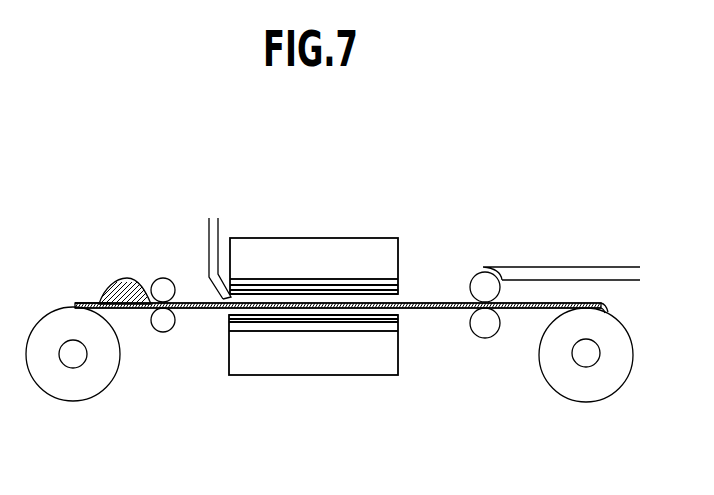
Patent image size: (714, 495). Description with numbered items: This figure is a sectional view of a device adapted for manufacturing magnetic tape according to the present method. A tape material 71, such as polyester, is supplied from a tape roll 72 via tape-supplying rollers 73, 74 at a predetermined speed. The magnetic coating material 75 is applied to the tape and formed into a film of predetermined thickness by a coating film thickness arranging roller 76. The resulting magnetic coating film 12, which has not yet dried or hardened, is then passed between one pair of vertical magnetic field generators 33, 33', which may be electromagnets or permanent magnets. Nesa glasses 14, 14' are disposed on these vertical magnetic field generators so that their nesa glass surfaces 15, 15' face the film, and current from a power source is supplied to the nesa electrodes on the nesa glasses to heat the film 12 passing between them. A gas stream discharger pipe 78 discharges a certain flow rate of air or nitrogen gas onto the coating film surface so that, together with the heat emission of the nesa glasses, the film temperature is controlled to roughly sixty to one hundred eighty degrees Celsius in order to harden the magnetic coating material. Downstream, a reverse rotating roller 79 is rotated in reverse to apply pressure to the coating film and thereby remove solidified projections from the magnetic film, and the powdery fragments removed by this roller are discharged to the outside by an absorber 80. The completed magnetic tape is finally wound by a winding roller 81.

The magnetic coating film 12 is at (199, 309).
The nesa glass 14 is at (342, 269).
The nesa glass surface 15 is at (342, 290).
The nesa glass 14' is at (345, 346).
The nesa glass surface 15' is at (345, 329).
The vertical magnetic field generator 33 is at (314, 237).
The vertical magnetic field generator 33' is at (313, 377).
The tape material 71 is at (98, 303).
The tape roll 72 is at (98, 386).
The tape-supplying roller 73 is at (166, 333).
The tape-supplying roller 74 is at (483, 340).
The magnetic coating material 75 is at (118, 280).
The coating film thickness arranging roller 76 is at (163, 278).
The gas stream discharger pipe 78 is at (208, 232).
The reverse rotating roller 79 is at (478, 272).
The absorber 80 is at (580, 267).
The winding roller 81 is at (563, 387).